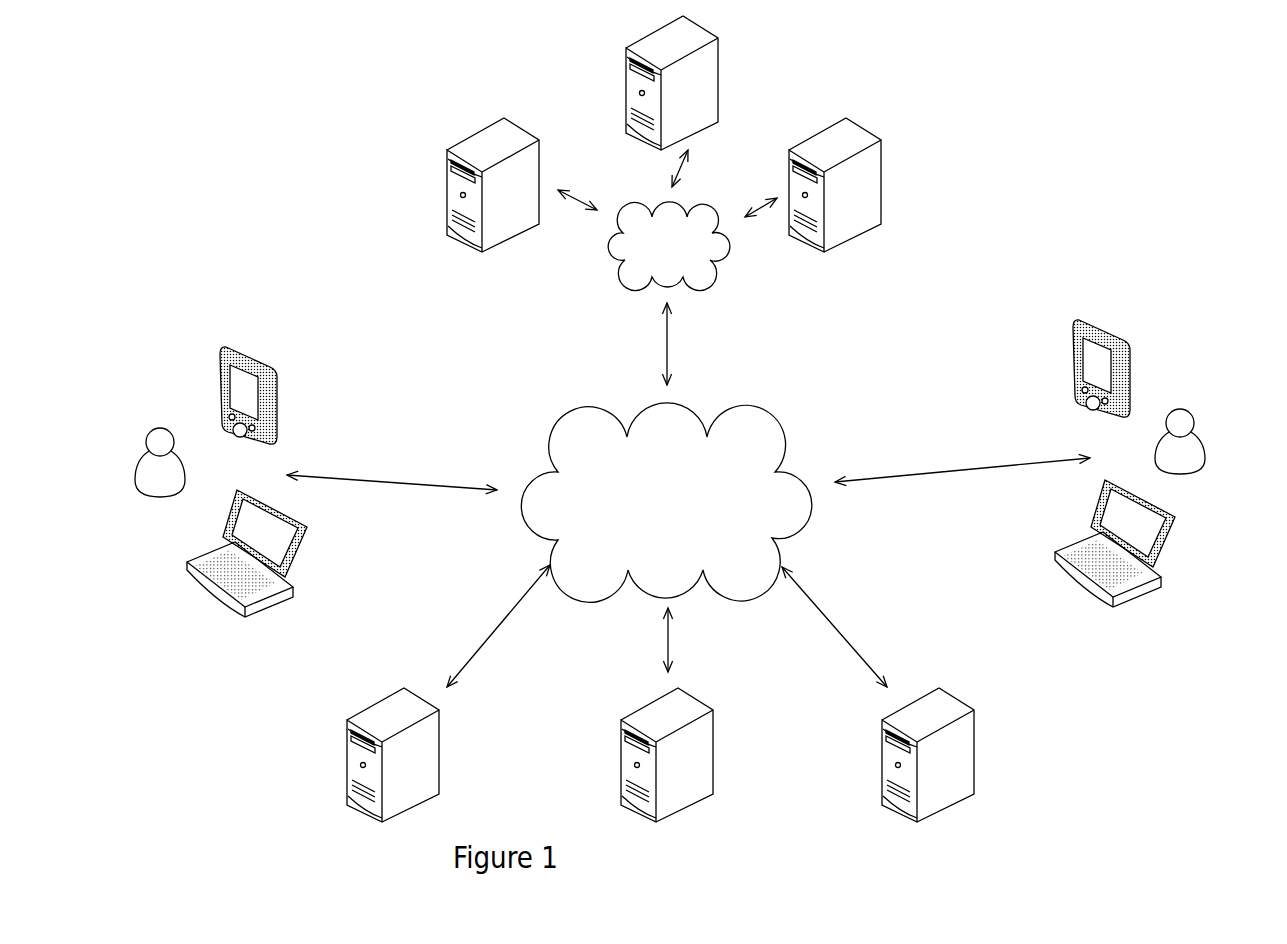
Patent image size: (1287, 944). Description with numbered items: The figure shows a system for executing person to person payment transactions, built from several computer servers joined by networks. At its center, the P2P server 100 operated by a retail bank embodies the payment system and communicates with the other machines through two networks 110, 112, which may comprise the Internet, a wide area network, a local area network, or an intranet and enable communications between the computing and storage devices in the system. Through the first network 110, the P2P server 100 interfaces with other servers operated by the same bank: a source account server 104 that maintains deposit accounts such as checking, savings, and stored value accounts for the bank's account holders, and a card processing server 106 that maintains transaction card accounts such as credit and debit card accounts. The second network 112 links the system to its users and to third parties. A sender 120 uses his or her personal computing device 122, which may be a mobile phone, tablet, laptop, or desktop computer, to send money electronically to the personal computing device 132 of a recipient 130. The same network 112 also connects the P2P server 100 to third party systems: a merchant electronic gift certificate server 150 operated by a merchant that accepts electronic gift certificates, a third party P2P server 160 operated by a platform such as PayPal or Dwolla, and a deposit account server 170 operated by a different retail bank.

The P2P server 100 is at (720, 82).
The source account server 104 is at (475, 132).
The card processing server 106 is at (884, 147).
The network 110 is at (669, 246).
The network 112 is at (666, 502).
The sender 120 is at (160, 497).
The personal computing device 122 is at (268, 362).
The recipient 130 is at (1203, 442).
The personal computing device 132 is at (1092, 317).
The merchant electronic gift certificate server 150 is at (347, 785).
The third party P2P server 160 is at (688, 805).
The deposit account server 170 is at (975, 752).